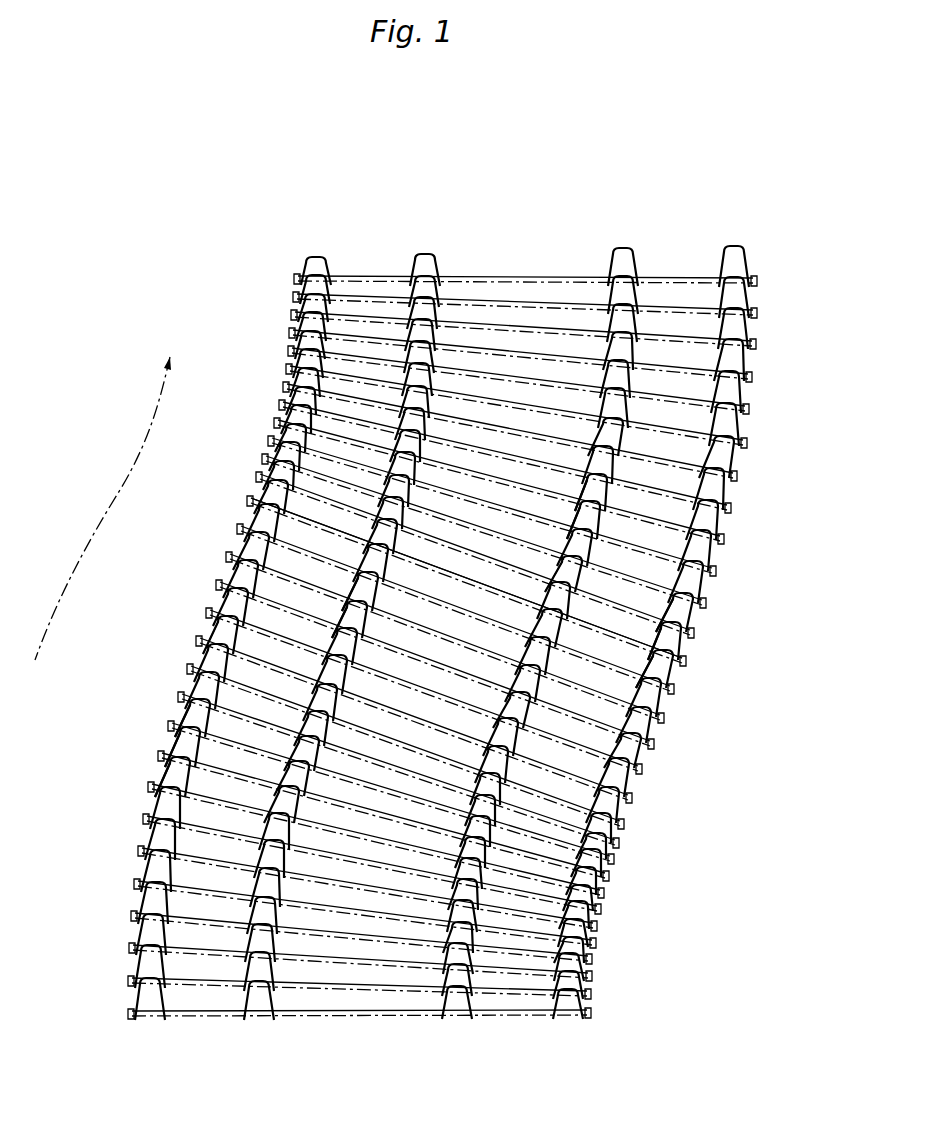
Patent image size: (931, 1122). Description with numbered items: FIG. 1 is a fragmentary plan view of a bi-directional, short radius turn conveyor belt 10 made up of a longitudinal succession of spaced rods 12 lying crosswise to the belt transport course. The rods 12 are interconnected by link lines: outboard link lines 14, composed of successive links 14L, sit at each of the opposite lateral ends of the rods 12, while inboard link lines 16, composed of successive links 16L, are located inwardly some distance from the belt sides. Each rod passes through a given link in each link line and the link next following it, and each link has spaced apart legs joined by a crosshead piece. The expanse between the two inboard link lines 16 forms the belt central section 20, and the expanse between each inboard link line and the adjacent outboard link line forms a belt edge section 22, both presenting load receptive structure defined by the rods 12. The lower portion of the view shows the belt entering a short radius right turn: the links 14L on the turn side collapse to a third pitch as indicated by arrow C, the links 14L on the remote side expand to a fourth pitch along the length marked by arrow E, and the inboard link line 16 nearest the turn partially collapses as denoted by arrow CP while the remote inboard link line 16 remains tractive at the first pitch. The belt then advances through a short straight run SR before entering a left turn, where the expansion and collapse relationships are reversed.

The conveyor belt 10 is at (542, 248).
The rods 12 is at (498, 277).
The outboard link lines 14 is at (314, 250).
The inboard link lines 16 is at (425, 250).
The links 14L is at (157, 794).
The links 16L is at (333, 603).
The belt central section 20 is at (485, 607).
The belt edge section 22 is at (262, 739).
The short straight run SR is at (226, 528).
The expansion length E is at (133, 832).
The partial collapse CP is at (505, 860).
The collapse C is at (618, 873).